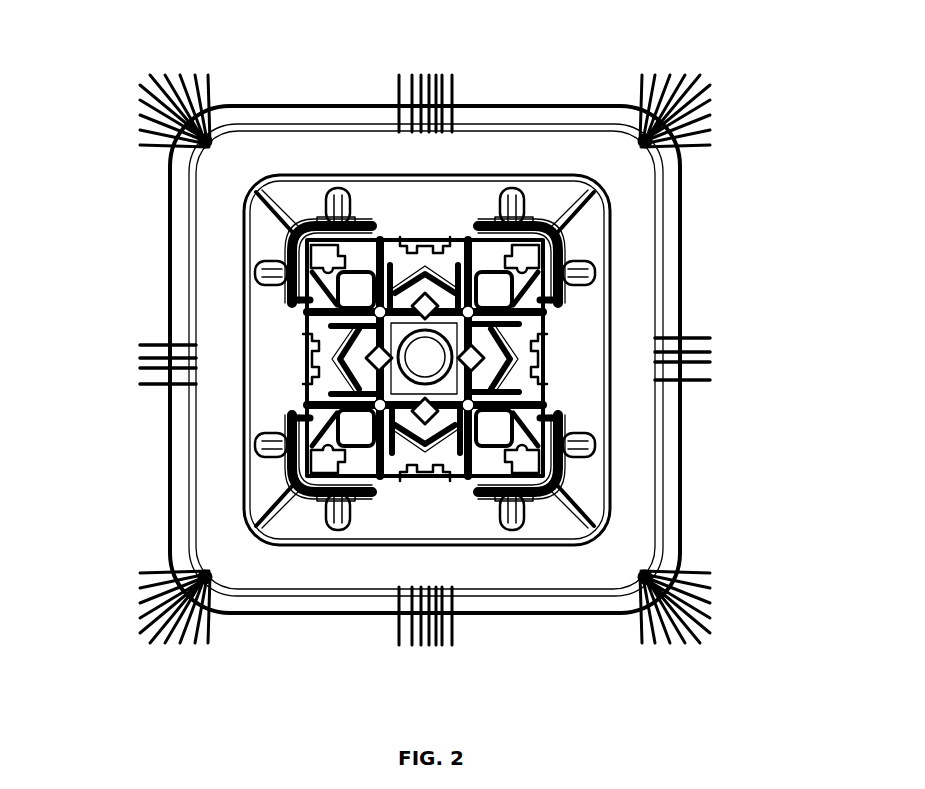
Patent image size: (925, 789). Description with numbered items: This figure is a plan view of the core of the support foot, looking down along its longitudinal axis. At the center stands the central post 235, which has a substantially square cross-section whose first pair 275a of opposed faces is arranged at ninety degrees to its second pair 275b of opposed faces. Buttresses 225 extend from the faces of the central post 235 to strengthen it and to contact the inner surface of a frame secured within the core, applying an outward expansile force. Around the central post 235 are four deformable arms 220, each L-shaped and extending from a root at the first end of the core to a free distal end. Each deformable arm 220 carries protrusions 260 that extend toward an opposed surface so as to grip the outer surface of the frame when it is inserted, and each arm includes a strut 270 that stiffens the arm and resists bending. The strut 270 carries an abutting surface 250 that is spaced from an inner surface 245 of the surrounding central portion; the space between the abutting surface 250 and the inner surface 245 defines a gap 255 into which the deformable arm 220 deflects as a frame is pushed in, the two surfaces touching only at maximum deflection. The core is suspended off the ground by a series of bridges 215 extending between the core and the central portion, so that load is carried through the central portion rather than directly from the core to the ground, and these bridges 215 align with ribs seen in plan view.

The bridges 215 is at (410, 523).
The deformable arms 220 is at (268, 251).
The buttresses 225 is at (343, 318).
The central post 235 is at (450, 308).
The inner surface 245 is at (303, 177).
The abutting surface 250 is at (336, 190).
The gap 255 is at (296, 197).
The protrusions 260 is at (530, 262).
The strut 270 is at (580, 458).
The first pair of opposed faces 275a is at (377, 380).
The second pair of opposed faces 275b is at (405, 298).